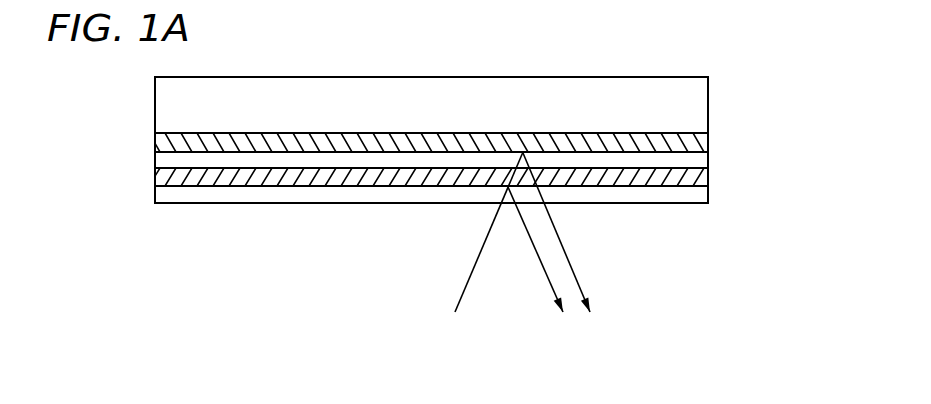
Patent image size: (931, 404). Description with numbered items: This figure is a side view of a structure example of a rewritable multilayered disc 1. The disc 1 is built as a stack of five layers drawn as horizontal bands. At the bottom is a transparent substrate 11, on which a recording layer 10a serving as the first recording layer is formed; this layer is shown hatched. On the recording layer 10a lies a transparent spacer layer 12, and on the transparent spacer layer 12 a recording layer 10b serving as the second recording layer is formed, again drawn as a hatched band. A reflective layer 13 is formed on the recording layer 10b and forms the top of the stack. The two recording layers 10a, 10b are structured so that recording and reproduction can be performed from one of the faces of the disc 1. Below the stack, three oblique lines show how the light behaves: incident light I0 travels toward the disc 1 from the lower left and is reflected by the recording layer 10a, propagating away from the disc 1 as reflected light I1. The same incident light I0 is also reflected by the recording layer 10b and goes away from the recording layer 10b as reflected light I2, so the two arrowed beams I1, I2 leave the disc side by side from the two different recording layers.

The rewritable multilayered disc 1 is at (533, 50).
The reflective layer 13 is at (708, 102).
The recording layer (second recording layer) 10b is at (708, 138).
The transparent spacer layer 12 is at (708, 160).
The recording layer (first recording layer) 10a is at (708, 177).
The transparent substrate 11 is at (708, 197).
The incident light I0 is at (462, 292).
The reflected light I1 is at (547, 278).
The reflected light I2 is at (568, 255).